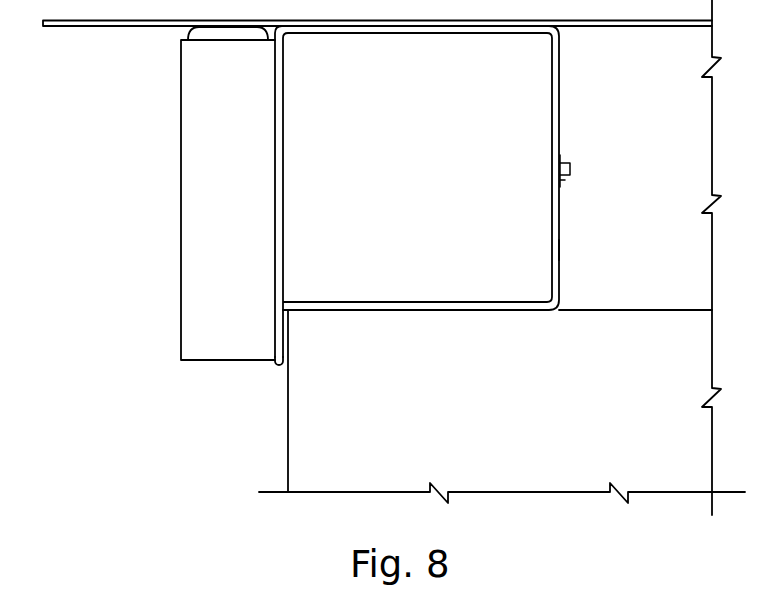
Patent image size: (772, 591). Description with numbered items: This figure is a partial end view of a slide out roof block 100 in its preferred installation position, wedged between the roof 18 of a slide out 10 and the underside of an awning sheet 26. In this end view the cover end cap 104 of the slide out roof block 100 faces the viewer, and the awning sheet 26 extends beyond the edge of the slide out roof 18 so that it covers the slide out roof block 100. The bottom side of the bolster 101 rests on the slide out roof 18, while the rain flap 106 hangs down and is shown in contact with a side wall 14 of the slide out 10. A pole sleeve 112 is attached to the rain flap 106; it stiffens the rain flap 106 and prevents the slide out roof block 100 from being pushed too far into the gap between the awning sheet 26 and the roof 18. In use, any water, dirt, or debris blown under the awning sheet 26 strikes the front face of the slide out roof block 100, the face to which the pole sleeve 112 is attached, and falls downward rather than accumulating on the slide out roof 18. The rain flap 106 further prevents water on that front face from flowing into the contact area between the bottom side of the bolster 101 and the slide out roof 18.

The slide out 10 is at (508, 413).
The side wall 14 is at (288, 452).
The roof 18 is at (622, 310).
The awning sheet 26 is at (90, 28).
The slide out roof block 100 is at (425, 195).
The bolster 101 is at (559, 233).
The cover end cap 104 is at (527, 128).
The rain flap 106 is at (277, 368).
The pole sleeve 112 is at (181, 232).